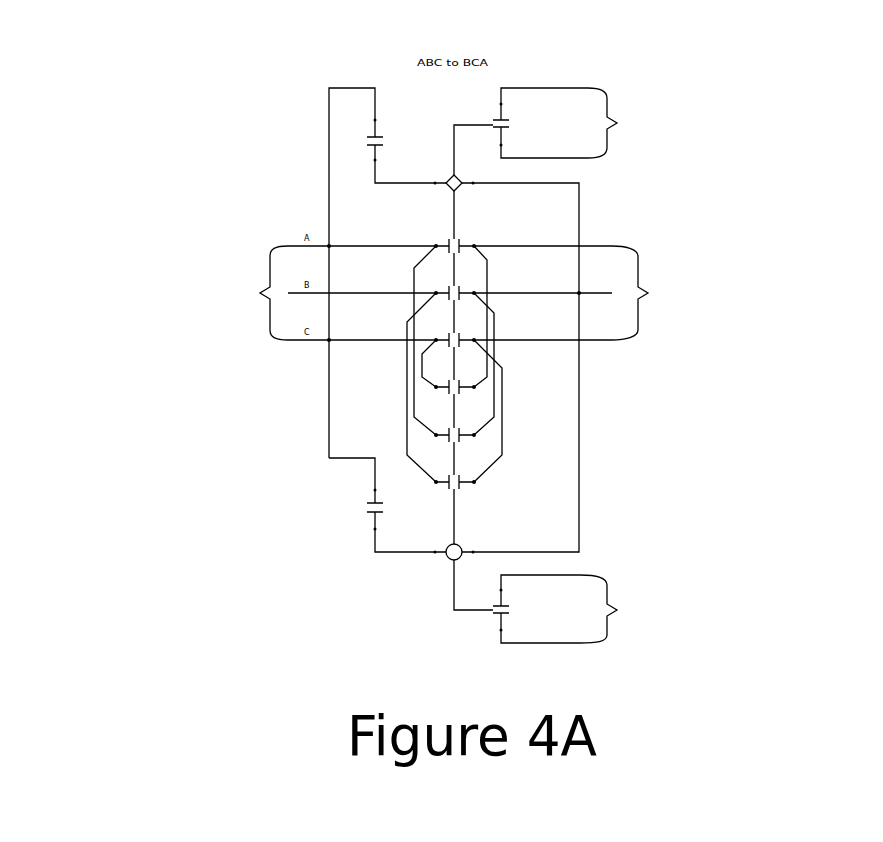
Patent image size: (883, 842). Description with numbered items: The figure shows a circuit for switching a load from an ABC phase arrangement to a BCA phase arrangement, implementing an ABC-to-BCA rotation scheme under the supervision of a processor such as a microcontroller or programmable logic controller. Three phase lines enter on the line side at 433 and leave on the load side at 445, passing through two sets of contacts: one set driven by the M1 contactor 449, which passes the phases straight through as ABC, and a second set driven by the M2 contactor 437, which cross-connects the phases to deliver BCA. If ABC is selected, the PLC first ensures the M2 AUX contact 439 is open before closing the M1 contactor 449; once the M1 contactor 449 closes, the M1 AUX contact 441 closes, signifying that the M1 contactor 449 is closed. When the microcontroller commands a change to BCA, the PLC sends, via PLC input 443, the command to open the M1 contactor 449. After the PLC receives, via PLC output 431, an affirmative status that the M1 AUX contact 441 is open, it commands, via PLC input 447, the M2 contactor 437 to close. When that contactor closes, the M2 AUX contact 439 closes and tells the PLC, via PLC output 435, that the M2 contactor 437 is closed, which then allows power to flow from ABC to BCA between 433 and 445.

The PLC output 431 is at (396, 97).
The M1 AUX contact 441 is at (547, 78).
The PLC input 443 is at (728, 120).
The M1 contactor 449 is at (474, 166).
The ABC power connection 433 is at (148, 288).
The BCA power connection 445 is at (754, 287).
The PLC output 435 is at (306, 490).
The M2 contactor 437 is at (425, 565).
The M2 AUX contact 439 is at (468, 624).
The PLC input 447 is at (728, 607).